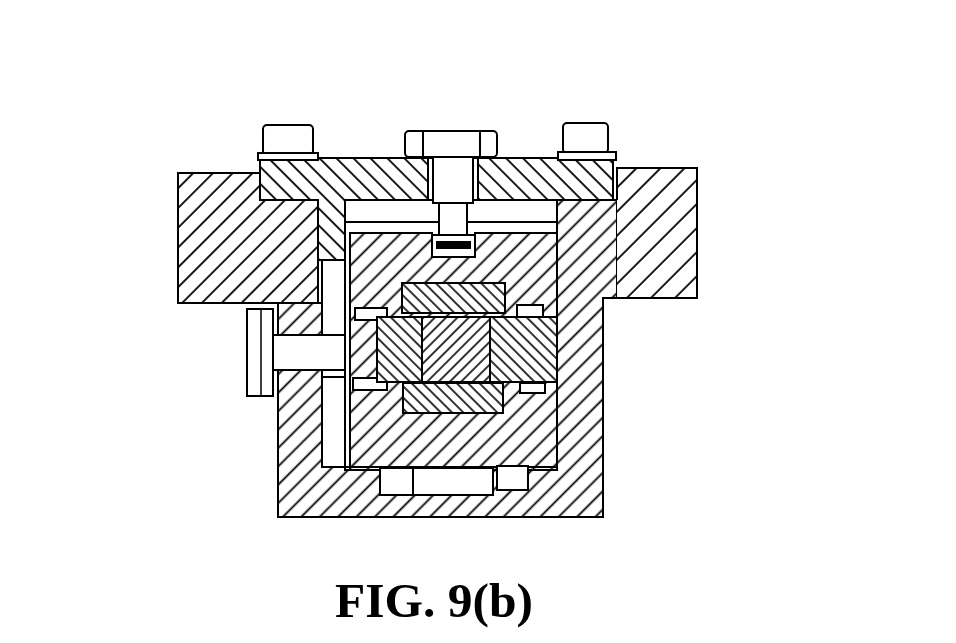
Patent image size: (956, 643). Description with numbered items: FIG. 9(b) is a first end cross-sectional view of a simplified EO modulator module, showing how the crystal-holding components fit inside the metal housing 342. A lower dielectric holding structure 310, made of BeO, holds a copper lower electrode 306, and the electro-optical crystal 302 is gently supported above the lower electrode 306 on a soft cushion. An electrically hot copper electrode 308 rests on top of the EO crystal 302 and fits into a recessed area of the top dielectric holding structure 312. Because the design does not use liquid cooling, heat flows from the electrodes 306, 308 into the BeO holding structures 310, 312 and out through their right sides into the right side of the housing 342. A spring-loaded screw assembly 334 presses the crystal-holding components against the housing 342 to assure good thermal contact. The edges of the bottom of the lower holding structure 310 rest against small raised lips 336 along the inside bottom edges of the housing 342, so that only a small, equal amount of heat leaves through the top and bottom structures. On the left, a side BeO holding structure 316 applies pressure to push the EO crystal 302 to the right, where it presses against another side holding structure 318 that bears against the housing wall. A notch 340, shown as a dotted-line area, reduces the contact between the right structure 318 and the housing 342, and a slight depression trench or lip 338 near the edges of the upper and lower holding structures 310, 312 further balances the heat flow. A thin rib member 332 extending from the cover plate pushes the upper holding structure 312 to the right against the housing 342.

The electro-optical crystal 302 is at (445, 330).
The lower electrode 306 is at (410, 400).
The copper electrode 308 is at (487, 283).
The lower dielectric holding structure 310 is at (543, 440).
The top dielectric holding structure 312 is at (552, 270).
The side BeO holding structure 316 is at (348, 398).
The side holding structure 318 is at (545, 365).
The thin rib member 332 is at (270, 211).
The spring-loaded screw assembly 334 is at (250, 377).
The small raised lips 336 is at (540, 477).
The depression trench or lip 338 is at (542, 383).
The notch 340 is at (542, 335).
The housing 342 is at (644, 167).